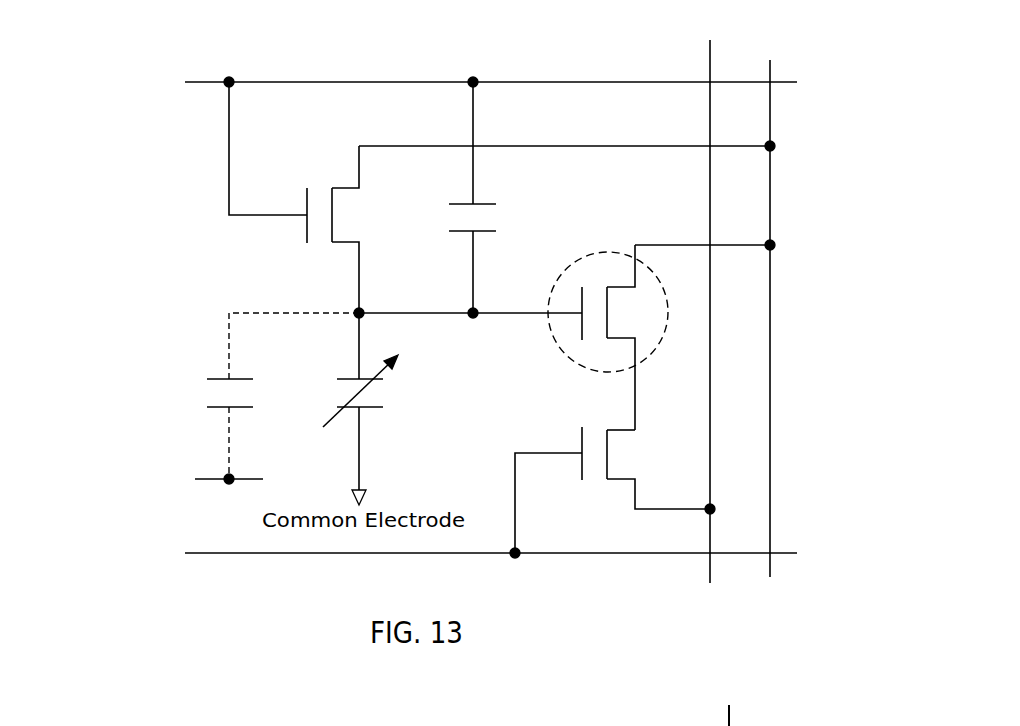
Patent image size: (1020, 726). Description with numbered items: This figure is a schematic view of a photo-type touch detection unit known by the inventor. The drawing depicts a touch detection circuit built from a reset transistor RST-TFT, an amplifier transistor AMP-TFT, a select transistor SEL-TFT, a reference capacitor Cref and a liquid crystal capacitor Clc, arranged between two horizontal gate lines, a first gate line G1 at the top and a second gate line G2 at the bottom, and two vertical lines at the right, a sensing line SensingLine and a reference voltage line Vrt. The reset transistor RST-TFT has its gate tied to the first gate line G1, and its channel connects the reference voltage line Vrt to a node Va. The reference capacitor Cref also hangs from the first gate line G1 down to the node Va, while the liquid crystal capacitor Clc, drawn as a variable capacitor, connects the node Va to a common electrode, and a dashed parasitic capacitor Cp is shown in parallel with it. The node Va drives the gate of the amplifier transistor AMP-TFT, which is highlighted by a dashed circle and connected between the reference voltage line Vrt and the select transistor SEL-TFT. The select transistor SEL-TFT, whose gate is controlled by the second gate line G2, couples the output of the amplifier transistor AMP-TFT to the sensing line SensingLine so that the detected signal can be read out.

The gate line G1 is at (419, 86).
The gate line G2 is at (419, 556).
The sensing line SensingLine is at (686, 299).
The reference voltage line Vrt is at (772, 307).
The reset transistor RST-TFT is at (274, 197).
The reference capacitor Cref is at (490, 197).
The node voltage Va is at (468, 303).
The parasitic capacitor Cp is at (277, 398).
The liquid crystal capacitor Clc is at (370, 409).
The amplifier transistor AMP-TFT is at (587, 337).
The select transistor SEL-TFT is at (608, 478).